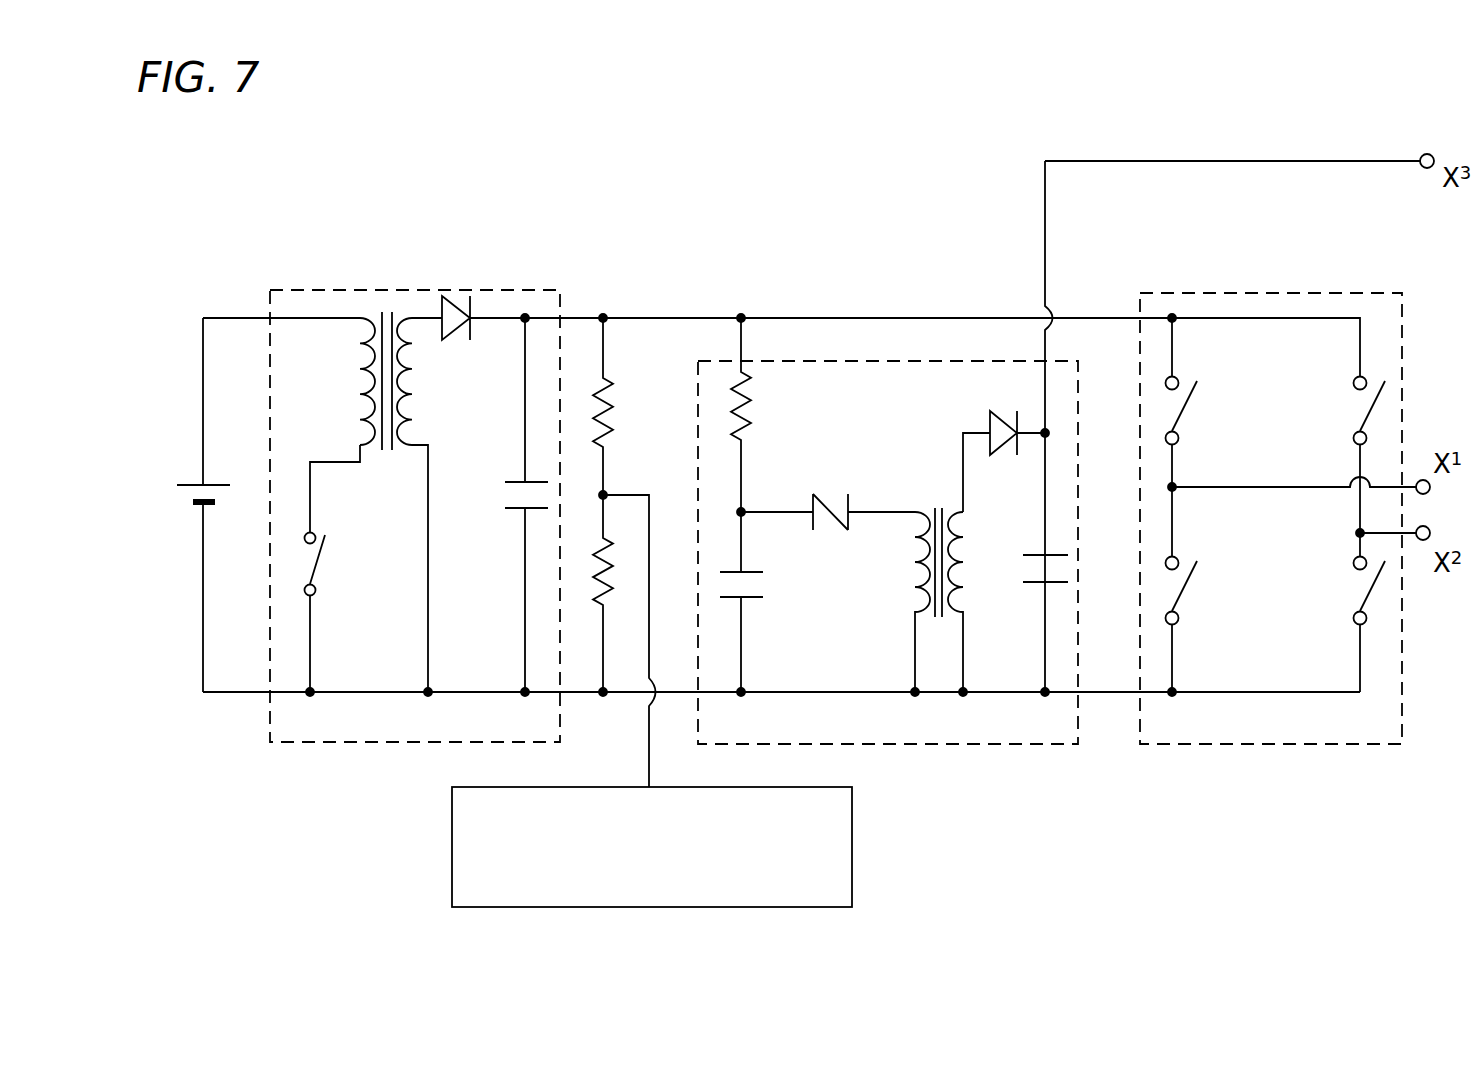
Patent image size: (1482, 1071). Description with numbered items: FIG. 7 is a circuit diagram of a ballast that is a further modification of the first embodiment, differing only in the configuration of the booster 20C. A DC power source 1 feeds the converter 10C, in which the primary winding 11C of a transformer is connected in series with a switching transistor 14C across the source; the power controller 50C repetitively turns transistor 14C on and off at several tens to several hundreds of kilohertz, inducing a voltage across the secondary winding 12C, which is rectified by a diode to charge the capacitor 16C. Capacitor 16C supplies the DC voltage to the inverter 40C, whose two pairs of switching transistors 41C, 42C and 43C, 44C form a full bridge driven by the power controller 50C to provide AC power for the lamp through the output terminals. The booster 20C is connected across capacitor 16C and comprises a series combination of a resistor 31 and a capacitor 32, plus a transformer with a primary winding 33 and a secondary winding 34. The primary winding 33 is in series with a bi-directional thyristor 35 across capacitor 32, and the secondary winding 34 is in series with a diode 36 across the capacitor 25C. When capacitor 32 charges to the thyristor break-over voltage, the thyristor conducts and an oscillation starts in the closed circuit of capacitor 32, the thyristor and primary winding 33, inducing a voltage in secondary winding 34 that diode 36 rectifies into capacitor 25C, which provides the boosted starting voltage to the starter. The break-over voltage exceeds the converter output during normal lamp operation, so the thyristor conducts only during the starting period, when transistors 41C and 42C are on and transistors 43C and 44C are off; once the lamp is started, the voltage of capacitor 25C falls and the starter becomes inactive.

The DC power source 1 is at (182, 497).
The converter 10C is at (270, 742).
The primary winding 11C is at (353, 360).
The secondary winding 12C is at (430, 375).
The switching transistor 14C is at (327, 562).
The capacitor 16C is at (493, 497).
The booster 20C is at (883, 747).
The capacitor 25C is at (1018, 565).
The resistor 31 is at (762, 418).
The capacitor 32 is at (770, 588).
The primary winding 33 is at (907, 573).
The secondary winding 34 is at (972, 573).
The bi-directional thyristor 35 is at (833, 490).
The diode 36 is at (990, 410).
The inverter 40C is at (1217, 292).
The switching transistor 41C is at (1197, 413).
The switching transistor 42C is at (1348, 597).
The switching transistor 43C is at (1348, 403).
The switching transistor 44C is at (1197, 590).
The power controller 50C is at (452, 817).